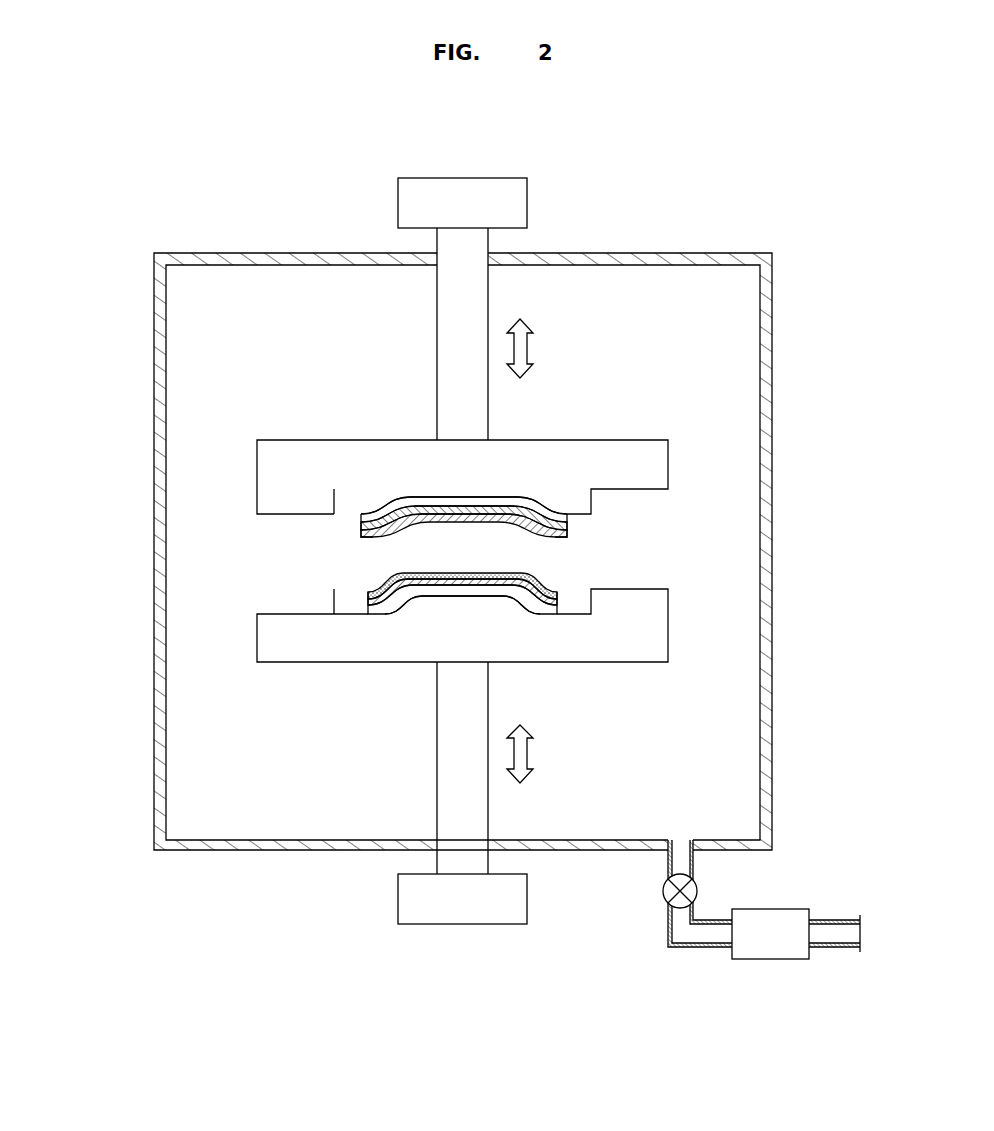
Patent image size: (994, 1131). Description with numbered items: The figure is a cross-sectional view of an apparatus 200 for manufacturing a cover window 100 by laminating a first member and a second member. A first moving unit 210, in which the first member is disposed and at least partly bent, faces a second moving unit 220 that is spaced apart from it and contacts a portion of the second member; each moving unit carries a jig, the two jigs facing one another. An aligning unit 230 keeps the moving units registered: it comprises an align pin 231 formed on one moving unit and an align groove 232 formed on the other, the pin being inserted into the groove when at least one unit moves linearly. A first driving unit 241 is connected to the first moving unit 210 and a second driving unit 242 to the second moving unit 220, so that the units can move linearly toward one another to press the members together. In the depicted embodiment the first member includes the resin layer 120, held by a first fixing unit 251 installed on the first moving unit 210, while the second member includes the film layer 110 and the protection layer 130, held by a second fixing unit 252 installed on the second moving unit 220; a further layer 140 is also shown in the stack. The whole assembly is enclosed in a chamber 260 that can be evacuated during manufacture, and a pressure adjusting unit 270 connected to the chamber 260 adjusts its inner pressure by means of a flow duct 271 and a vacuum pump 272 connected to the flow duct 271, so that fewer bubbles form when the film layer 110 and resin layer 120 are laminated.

The cover window 100 is at (97, 523).
The film layer 110 is at (361, 531).
The resin layer 120 is at (368, 606).
The protection layer 130 is at (361, 522).
The release film 140 is at (368, 599).
The apparatus for manufacturing a cover window 200 is at (210, 170).
The first moving unit 210 is at (658, 626).
The second moving unit 220 is at (658, 465).
The aligning unit 230 is at (853, 507).
The align pin 231 is at (632, 588).
The align groove 232 is at (632, 490).
The first driving unit 241 is at (405, 902).
The second driving unit 242 is at (406, 206).
The first fixing unit 251 is at (548, 608).
The second fixing unit 252 is at (547, 505).
The chamber 260 is at (768, 344).
The pressure adjusting unit 270 is at (733, 1020).
The flow duct 271 is at (665, 899).
The vacuum pump 272 is at (765, 955).